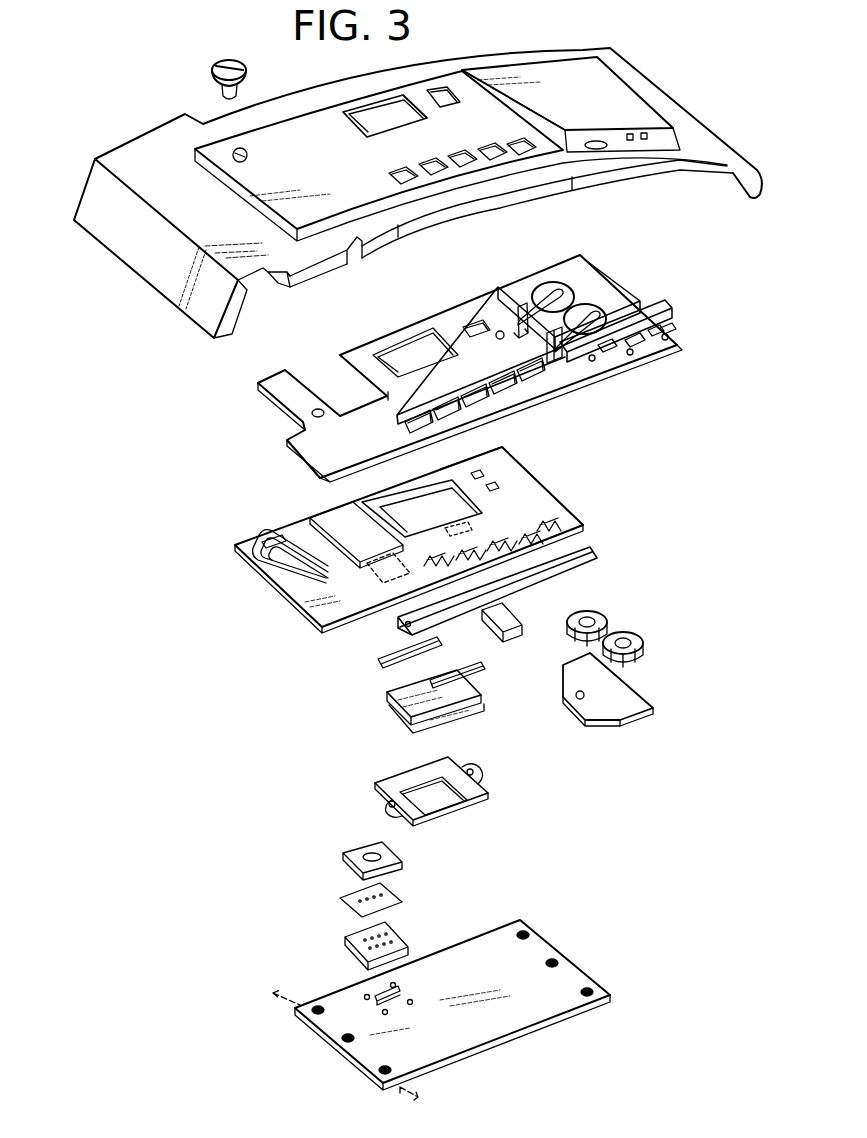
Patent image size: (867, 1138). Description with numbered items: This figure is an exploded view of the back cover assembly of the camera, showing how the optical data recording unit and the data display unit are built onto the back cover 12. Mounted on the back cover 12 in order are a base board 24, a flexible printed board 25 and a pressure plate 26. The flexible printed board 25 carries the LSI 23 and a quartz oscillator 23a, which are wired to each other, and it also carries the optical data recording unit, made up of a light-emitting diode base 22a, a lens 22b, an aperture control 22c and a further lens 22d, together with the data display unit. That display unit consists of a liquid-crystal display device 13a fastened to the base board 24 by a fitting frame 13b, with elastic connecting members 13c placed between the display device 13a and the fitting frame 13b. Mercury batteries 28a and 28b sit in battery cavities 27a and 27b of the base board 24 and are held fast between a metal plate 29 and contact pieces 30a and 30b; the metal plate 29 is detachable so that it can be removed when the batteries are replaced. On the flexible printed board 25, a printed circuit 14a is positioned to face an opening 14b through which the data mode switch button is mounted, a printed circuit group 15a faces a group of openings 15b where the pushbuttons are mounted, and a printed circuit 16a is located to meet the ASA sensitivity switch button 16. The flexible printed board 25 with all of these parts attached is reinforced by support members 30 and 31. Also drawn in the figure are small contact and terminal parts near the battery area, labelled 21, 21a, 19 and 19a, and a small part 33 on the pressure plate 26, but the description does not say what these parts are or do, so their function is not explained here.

The back cover 12 is at (160, 280).
The ASA sensitivity switch button 16 is at (213, 74).
The opening 14b is at (470, 318).
The base board 24 is at (288, 432).
The group of openings 15b is at (475, 406).
The battery cavity 27a is at (553, 282).
The battery cavity 27b is at (590, 300).
The contact piece 30a is at (523, 305).
The contact piece 30b is at (562, 368).
The contact member 21 is at (594, 362).
The contact member 21a is at (628, 350).
The terminal 19 is at (656, 340).
The terminal 19a is at (672, 342).
The flexible printed board 25 is at (303, 612).
The printed circuit 14a is at (507, 472).
The printed circuit 16a is at (268, 540).
The light-emitting diode base 22a is at (336, 518).
The quartz oscillator 23a is at (452, 530).
The LSI 23 is at (383, 584).
The printed circuit group 15a is at (492, 525).
The support member 30 is at (598, 565).
The support member 31 is at (512, 636).
The mercury battery 28a is at (598, 622).
The mercury battery 28b is at (648, 650).
The metal plate 29 is at (636, 688).
The connecting member 13c is at (380, 663).
The liquid-crystal display device 13a is at (388, 704).
The fitting frame 13b is at (450, 805).
The lens 22b is at (340, 856).
The aperture control 22c is at (390, 890).
The lens 22d is at (408, 946).
The connector 33 is at (375, 996).
The pressure plate 26 is at (348, 1068).